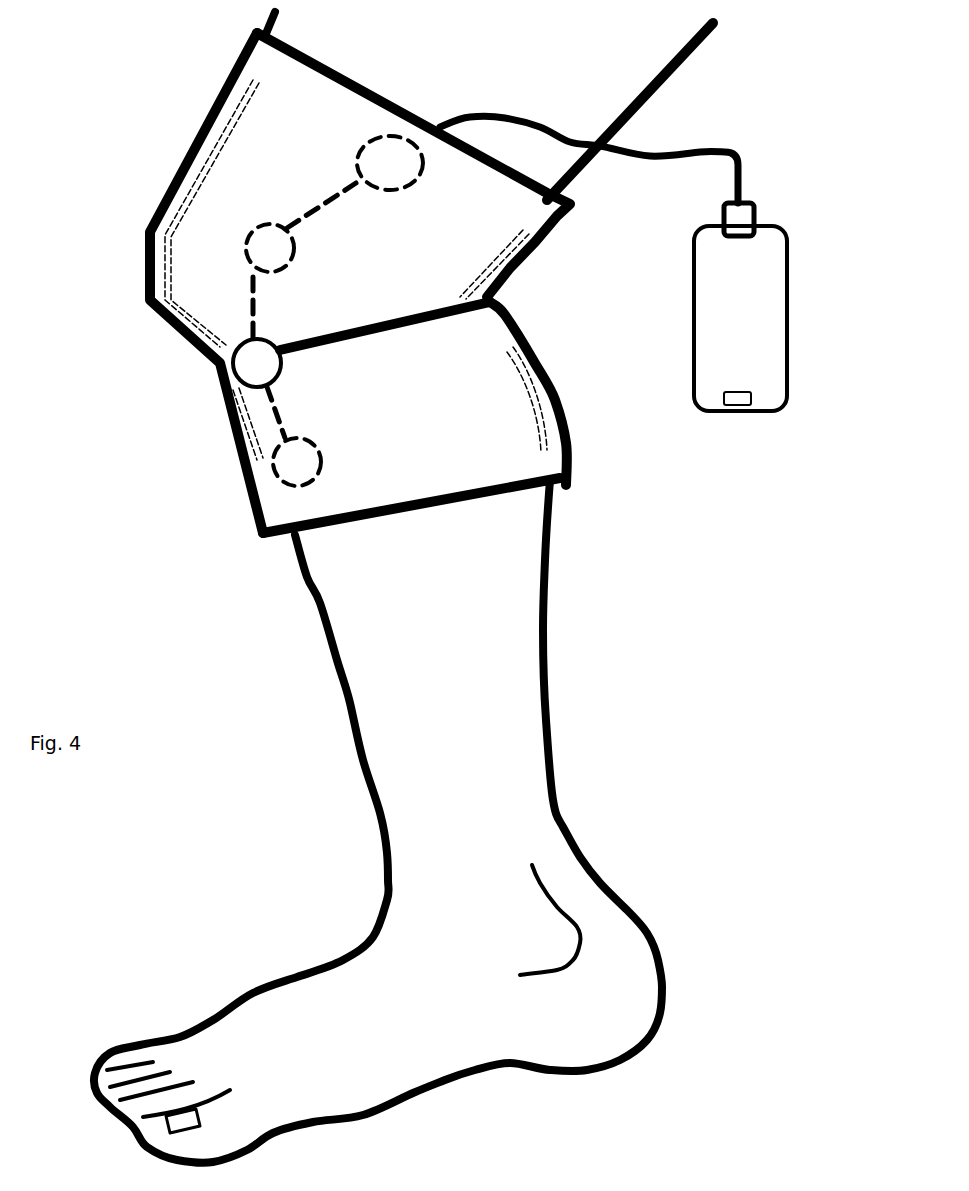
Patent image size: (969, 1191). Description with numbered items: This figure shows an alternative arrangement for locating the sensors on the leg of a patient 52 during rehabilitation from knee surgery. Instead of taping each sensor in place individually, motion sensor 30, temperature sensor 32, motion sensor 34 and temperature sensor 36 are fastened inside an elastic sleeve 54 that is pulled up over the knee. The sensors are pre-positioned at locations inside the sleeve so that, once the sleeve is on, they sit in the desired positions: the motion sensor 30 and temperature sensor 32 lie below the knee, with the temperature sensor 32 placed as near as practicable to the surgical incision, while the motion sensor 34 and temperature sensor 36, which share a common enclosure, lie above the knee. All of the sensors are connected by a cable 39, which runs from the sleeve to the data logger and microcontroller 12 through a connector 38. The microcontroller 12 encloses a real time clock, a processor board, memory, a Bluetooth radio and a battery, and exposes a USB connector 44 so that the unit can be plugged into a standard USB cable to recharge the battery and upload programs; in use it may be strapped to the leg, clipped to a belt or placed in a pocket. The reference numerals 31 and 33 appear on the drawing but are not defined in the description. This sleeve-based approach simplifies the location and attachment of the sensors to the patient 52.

The data logger and microcontroller 12 is at (727, 345).
The motion sensor 30 is at (292, 460).
The electrode 31 is at (252, 362).
The temperature sensor 32 is at (263, 245).
The upper cuff 33 is at (498, 298).
The motion sensor 34 is at (400, 175).
The temperature sensor 36 is at (417, 163).
The connector 38 is at (757, 215).
The cable 39 is at (740, 147).
The USB connector 44 is at (742, 398).
The patient 52 is at (502, 552).
The elastic sleeve 54 is at (518, 458).